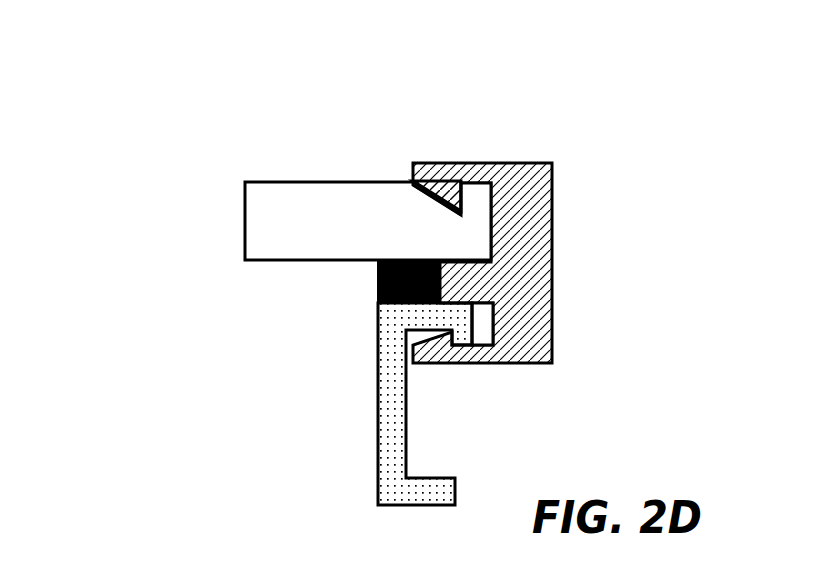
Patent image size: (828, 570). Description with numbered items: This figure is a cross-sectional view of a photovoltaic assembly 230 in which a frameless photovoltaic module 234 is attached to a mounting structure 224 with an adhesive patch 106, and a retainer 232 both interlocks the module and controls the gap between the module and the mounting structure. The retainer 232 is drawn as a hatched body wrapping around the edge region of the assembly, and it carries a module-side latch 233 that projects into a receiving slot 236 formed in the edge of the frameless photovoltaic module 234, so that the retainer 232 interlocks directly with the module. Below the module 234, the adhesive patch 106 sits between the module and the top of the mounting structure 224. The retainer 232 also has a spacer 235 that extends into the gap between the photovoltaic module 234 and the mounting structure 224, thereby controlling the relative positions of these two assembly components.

The photovoltaic assembly 230 is at (265, 110).
The retainer 232 is at (513, 163).
The module-side latch 233 is at (450, 190).
The frameless photovoltaic module 234 is at (245, 223).
The spacer 235 is at (467, 290).
The receiving slot 236 is at (460, 212).
The adhesive patch 106 is at (377, 287).
The mounting structure 224 is at (378, 467).